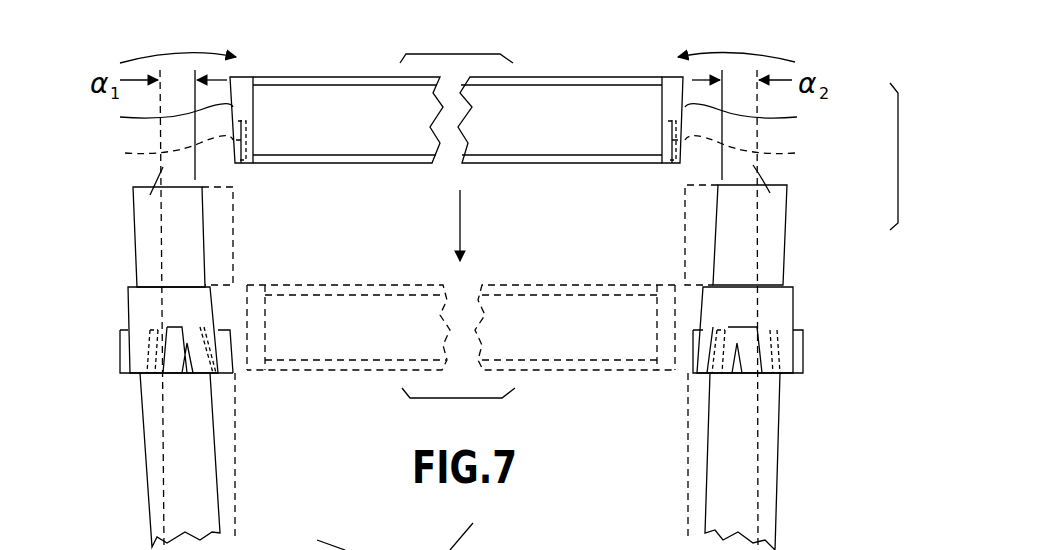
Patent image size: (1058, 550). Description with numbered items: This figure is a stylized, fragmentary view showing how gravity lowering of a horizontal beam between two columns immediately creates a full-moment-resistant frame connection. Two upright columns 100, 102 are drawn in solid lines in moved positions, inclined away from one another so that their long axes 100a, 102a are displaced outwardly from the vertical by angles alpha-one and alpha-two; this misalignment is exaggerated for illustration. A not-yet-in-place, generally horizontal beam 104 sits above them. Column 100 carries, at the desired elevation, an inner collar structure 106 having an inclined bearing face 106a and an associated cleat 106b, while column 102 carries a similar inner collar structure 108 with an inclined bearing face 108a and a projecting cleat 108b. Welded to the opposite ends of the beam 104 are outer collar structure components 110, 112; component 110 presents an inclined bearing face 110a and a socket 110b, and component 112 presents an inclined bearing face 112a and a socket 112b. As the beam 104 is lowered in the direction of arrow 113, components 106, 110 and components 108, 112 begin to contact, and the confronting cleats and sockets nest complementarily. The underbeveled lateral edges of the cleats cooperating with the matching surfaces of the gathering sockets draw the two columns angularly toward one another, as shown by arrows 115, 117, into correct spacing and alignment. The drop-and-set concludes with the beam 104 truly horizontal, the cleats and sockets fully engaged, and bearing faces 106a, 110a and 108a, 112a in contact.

The upright column 100 is at (133, 265).
The long axis of column 100a is at (150, 195).
The upright column 102 is at (790, 265).
The long axis of column 102a is at (873, 237).
The horizontal beam 104 is at (317, 74).
The inner collar structure 106 is at (126, 313).
The inclined bearing face 106a is at (217, 308).
The cleat 106b is at (232, 347).
The inner collar structure 108 is at (797, 313).
The inclined bearing face 108a is at (700, 308).
The projecting cleat 108b is at (692, 347).
The outer collar structure component 110 is at (259, 125).
The inclined bearing face 110a is at (117, 131).
The socket 110b is at (122, 167).
The outer collar structure component 112 is at (658, 127).
The inclined bearing face 112a is at (863, 131).
The socket 112b is at (860, 167).
The arrow 113 is at (460, 220).
The arrow 115 is at (183, 55).
The arrow 117 is at (732, 55).